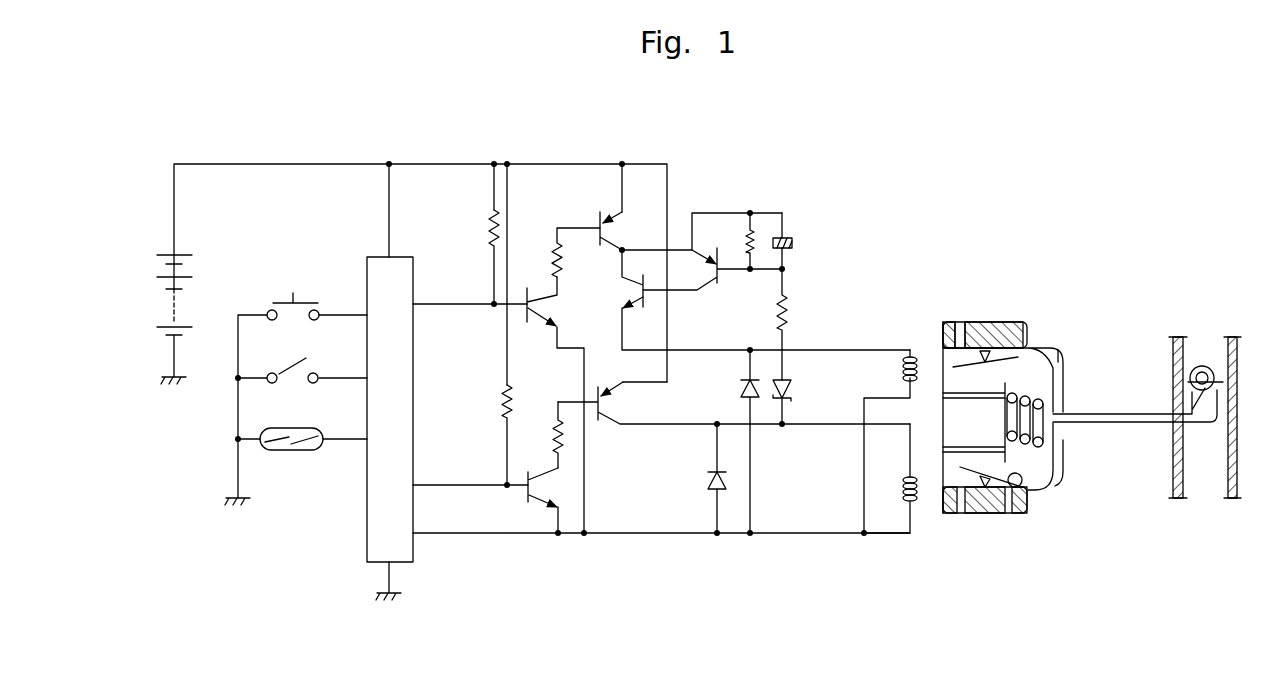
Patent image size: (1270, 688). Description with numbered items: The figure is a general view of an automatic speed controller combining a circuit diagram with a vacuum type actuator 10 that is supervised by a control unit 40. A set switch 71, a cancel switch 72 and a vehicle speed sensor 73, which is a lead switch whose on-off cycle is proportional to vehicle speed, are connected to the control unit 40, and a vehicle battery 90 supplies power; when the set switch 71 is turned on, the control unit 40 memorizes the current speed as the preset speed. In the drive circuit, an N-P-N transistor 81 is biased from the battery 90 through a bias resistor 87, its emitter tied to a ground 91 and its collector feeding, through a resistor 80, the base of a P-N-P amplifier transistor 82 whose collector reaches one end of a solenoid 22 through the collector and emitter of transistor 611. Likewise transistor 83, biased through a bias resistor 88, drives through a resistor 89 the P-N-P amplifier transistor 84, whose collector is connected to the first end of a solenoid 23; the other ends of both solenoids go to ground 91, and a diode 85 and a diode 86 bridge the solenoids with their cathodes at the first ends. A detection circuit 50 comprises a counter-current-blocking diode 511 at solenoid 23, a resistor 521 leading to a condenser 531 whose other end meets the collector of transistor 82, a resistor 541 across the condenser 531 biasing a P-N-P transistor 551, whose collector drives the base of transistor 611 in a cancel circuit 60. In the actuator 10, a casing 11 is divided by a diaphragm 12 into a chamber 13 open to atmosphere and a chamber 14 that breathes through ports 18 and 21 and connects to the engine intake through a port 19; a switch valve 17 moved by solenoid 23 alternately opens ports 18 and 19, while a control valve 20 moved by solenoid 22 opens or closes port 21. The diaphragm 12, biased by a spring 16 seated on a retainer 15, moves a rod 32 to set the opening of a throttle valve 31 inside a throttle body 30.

The actuator 10 is at (1011, 401).
The casing 11 is at (1042, 345).
The diaphragm 12 is at (1047, 475).
The chamber 13 is at (1056, 360).
The chamber 14 is at (1031, 467).
The retainer 15 is at (1003, 422).
The spring 16 is at (1032, 437).
The switch valve 17 is at (1018, 513).
The port 18 is at (960, 513).
The port 19 is at (1006, 513).
The control valve 20 is at (952, 383).
The port 21 is at (961, 330).
The solenoid 22 is at (904, 358).
The solenoid 23 is at (917, 508).
The throttle body 30 is at (1238, 433).
The throttle valve 31 is at (1190, 367).
The rod 32 is at (1157, 423).
The control unit 40 is at (366, 541).
The detection circuit 50 is at (780, 275).
The cancel circuit 60 is at (613, 299).
The set switch 71 is at (283, 297).
The cancel switch 72 is at (284, 370).
The vehicle speed sensor 73 is at (270, 452).
The resistor 80 is at (553, 247).
The transistor 81 is at (537, 318).
The transistor 82 is at (609, 248).
The transistor 83 is at (536, 494).
The transistor 84 is at (610, 421).
The diode 85 is at (738, 387).
The diode 86 is at (704, 482).
The bias resistor 87 is at (490, 220).
The bias resistor 88 is at (497, 402).
The resistor 89 is at (551, 427).
The battery 90 is at (182, 311).
The ground 91 is at (647, 537).
The diode 511 is at (792, 394).
The resistor 521 is at (788, 303).
The condenser 531 is at (792, 242).
The resistor 541 is at (745, 232).
The transistor 551 is at (718, 280).
The transistor 611 is at (646, 298).